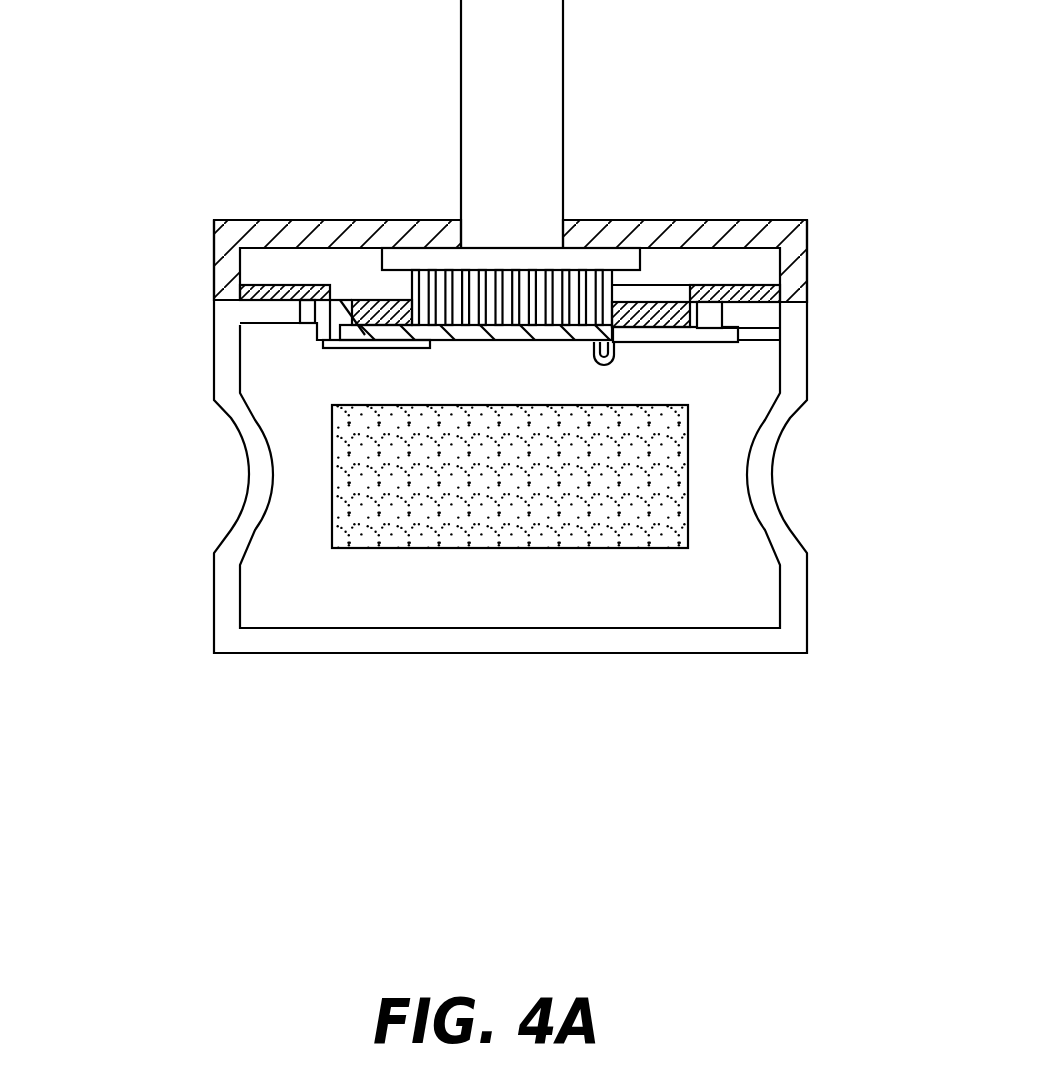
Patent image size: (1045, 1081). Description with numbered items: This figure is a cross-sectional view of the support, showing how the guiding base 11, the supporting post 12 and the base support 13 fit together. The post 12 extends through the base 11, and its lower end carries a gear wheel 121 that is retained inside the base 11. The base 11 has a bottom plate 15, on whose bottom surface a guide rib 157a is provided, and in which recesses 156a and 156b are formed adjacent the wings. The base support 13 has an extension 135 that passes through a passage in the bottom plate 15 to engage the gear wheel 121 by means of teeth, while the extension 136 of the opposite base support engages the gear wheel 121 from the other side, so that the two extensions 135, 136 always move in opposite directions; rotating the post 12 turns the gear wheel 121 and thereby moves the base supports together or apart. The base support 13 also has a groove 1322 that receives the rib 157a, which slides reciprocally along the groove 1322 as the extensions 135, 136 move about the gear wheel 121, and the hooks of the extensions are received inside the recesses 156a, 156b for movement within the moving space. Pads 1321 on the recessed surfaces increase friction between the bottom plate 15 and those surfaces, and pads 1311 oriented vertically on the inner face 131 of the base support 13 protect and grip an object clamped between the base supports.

The guiding base 11 is at (732, 220).
The supporting post 12 is at (535, 14).
The gear wheel 121 is at (615, 283).
The base support 13 is at (772, 532).
The inner face 131 is at (268, 370).
The pads 1311 is at (355, 472).
The pads 1321 is at (285, 322).
The groove 1322 is at (577, 345).
The extension 135 is at (380, 312).
The extension 136 is at (637, 323).
The bottom plate 15 is at (770, 293).
The recess 156a is at (376, 313).
The recess 156b is at (707, 305).
The rib 157a is at (598, 360).